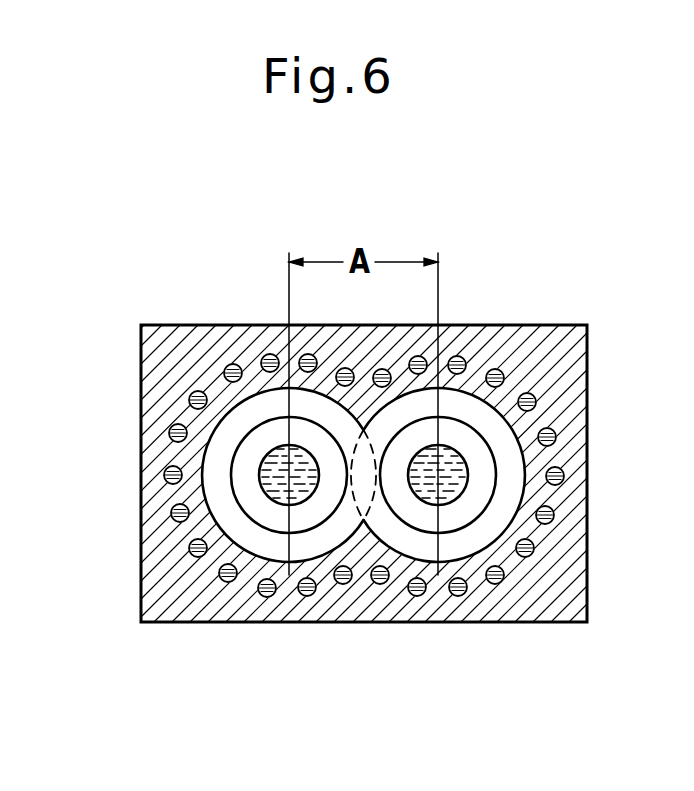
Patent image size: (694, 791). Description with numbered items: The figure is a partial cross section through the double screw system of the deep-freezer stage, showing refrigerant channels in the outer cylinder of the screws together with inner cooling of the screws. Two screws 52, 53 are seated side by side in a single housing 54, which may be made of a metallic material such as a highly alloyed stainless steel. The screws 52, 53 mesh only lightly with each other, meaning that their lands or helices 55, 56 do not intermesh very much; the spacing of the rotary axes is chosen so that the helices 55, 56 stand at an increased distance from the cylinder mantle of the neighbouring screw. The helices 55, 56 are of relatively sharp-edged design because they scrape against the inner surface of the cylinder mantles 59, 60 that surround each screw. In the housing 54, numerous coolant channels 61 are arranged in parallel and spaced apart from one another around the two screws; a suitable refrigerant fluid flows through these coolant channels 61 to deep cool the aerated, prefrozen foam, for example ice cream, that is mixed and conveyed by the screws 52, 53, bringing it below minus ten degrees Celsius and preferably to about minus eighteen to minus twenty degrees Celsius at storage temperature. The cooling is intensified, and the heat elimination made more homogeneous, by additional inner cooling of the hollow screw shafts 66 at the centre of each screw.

The screw 52 is at (252, 503).
The screw 53 is at (458, 518).
The housing 54 is at (245, 608).
The land of the screw (helix) 55 is at (215, 488).
The land of the screw (helix) 56 is at (405, 543).
The cylinder mantle 59 is at (228, 403).
The cylinder mantle 60 is at (438, 474).
The coolant channels 61 is at (198, 391).
The screw shafts 66 is at (266, 460).